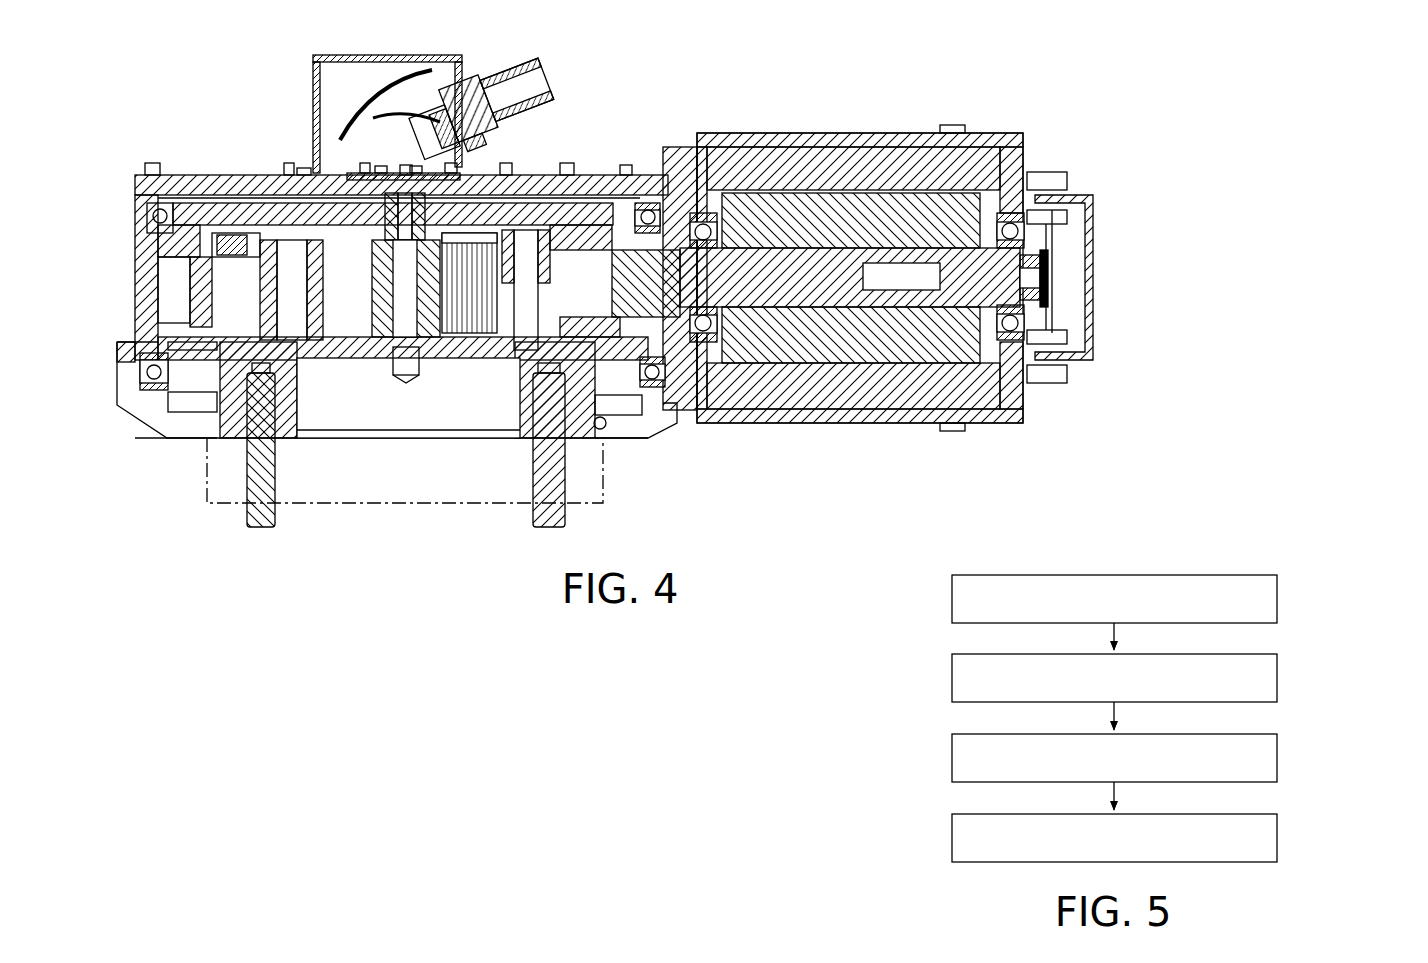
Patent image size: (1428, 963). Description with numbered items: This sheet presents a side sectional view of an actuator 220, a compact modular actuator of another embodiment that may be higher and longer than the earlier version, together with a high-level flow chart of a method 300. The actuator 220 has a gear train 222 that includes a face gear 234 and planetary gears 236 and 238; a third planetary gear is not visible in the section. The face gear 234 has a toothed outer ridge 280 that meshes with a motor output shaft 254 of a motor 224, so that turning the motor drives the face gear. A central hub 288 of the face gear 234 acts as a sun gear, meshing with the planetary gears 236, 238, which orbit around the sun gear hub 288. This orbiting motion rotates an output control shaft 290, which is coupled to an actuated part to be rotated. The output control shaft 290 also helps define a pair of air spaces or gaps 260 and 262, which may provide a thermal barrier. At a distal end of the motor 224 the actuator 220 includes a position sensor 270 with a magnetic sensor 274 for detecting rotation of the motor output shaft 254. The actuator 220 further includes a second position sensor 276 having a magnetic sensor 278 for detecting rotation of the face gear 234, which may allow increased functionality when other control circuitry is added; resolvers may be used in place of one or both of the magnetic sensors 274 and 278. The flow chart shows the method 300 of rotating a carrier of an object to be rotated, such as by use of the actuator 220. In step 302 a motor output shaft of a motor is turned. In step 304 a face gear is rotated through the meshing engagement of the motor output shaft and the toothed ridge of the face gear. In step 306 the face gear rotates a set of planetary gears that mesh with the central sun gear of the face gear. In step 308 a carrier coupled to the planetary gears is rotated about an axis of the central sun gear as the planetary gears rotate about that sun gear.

In FIG. 4, the actuator 220 is at (178, 134).
In FIG. 4, the gear train 222 is at (228, 367).
In FIG. 4, the motor 224 is at (872, 138).
In FIG. 4, the face gear 234 is at (588, 222).
In FIG. 4, the planetary gear 236 is at (233, 273).
In FIG. 4, the planetary gear 238 is at (478, 270).
In FIG. 4, the motor output shaft 254 is at (690, 357).
In FIG. 4, the air space 260 is at (347, 240).
In FIG. 4, the air space 262 is at (325, 420).
In FIG. 4, the position sensor 270 is at (1044, 280).
In FIG. 4, the magnetic sensor 274 is at (1025, 282).
In FIG. 4, the second position sensor 276 is at (412, 163).
In FIG. 4, the magnetic sensor 278 is at (400, 190).
In FIG. 4, the toothed outer ridge 280 is at (630, 245).
In FIG. 4, the central hub 288 is at (432, 317).
In FIG. 4, the output control shaft 290 is at (613, 373).
In FIG. 5, the method 300 is at (918, 624).
In FIG. 5, the step 302 is at (1278, 600).
In FIG. 5, the step 304 is at (1278, 680).
In FIG. 5, the step 306 is at (1278, 760).
In FIG. 5, the step 308 is at (1278, 840).